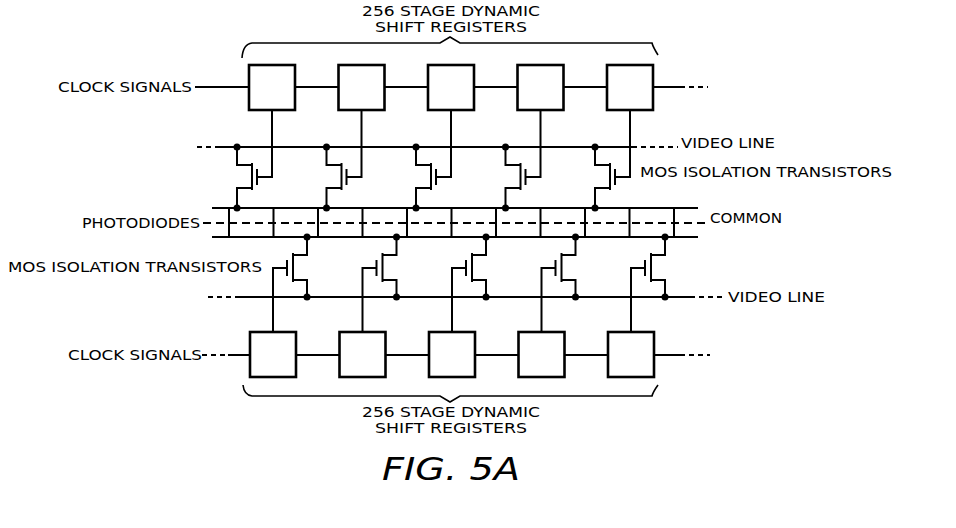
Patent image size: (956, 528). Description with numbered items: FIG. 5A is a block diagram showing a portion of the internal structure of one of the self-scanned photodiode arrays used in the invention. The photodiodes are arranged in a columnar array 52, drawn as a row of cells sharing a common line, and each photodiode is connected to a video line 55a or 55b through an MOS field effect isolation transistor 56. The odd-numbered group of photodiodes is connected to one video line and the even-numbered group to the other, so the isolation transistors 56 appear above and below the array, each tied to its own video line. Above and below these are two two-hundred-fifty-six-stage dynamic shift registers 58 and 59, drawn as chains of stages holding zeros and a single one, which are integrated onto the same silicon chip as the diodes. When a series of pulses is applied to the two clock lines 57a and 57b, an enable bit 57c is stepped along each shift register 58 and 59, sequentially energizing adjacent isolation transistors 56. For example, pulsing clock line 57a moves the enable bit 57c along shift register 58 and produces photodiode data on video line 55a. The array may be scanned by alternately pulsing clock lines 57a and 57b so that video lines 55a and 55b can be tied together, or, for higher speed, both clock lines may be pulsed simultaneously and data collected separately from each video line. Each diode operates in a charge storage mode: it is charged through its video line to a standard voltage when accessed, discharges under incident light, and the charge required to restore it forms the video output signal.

The columnar array 52 is at (704, 231).
The video line 55a is at (640, 147).
The video line 55b is at (680, 297).
The MOS field effect isolation transistor 56 is at (236, 174).
The clock line 57a is at (228, 88).
The clock line 57b is at (240, 354).
The enable bit 57c is at (456, 88).
The 256-stage dynamic shift register 58 is at (451, 84).
The 256-stage dynamic shift register 59 is at (246, 363).